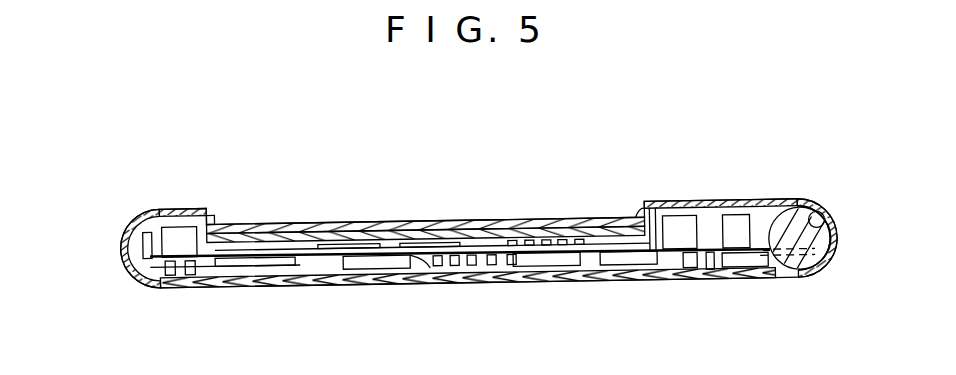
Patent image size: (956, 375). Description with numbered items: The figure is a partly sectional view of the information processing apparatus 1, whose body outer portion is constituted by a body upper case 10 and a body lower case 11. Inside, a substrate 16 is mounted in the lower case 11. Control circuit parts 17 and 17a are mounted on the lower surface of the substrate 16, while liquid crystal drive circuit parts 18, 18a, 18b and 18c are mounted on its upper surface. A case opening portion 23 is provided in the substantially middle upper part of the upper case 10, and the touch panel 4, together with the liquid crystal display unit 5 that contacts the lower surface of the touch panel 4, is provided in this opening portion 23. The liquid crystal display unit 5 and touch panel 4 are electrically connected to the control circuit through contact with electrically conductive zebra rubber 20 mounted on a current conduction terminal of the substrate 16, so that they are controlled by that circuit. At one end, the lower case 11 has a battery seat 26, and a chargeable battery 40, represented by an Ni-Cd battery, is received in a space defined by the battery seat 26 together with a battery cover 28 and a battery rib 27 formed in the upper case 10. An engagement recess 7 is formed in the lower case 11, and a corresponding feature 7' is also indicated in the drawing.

The apparatus 1 is at (118, 235).
The touch panel 4 is at (450, 222).
The liquid crystal display unit 5 is at (393, 222).
The engagement recess 7 is at (698, 304).
The terminal 7' is at (225, 311).
The body upper case 10 is at (647, 203).
The body lower case 11 is at (560, 280).
The substrate 16 is at (218, 288).
The control circuit part 17 is at (322, 287).
The control circuit part 17a is at (420, 287).
The liquid crystal drive circuit part 18 is at (262, 222).
The liquid crystal drive circuit part 18a is at (345, 246).
The liquid crystal drive circuit part 18b is at (673, 202).
The liquid crystal drive circuit part 18c is at (737, 203).
The electrically conductive zebra rubber 20 is at (220, 218).
The case opening portion 23 is at (640, 212).
The battery seat 26 is at (833, 268).
The battery rib 27 is at (750, 203).
The battery cover 28 is at (807, 205).
The chargeable battery 40 is at (767, 280).